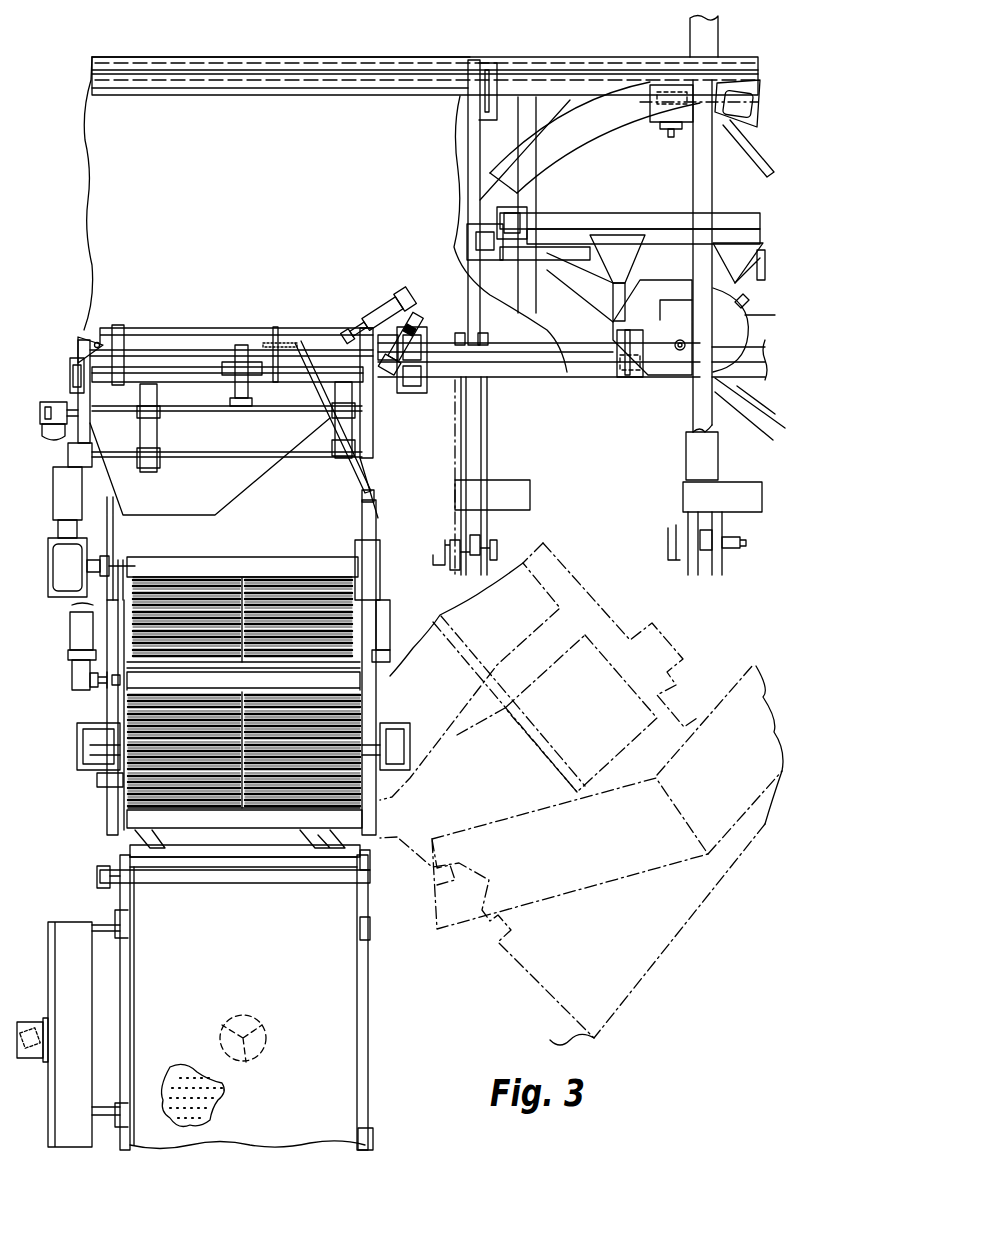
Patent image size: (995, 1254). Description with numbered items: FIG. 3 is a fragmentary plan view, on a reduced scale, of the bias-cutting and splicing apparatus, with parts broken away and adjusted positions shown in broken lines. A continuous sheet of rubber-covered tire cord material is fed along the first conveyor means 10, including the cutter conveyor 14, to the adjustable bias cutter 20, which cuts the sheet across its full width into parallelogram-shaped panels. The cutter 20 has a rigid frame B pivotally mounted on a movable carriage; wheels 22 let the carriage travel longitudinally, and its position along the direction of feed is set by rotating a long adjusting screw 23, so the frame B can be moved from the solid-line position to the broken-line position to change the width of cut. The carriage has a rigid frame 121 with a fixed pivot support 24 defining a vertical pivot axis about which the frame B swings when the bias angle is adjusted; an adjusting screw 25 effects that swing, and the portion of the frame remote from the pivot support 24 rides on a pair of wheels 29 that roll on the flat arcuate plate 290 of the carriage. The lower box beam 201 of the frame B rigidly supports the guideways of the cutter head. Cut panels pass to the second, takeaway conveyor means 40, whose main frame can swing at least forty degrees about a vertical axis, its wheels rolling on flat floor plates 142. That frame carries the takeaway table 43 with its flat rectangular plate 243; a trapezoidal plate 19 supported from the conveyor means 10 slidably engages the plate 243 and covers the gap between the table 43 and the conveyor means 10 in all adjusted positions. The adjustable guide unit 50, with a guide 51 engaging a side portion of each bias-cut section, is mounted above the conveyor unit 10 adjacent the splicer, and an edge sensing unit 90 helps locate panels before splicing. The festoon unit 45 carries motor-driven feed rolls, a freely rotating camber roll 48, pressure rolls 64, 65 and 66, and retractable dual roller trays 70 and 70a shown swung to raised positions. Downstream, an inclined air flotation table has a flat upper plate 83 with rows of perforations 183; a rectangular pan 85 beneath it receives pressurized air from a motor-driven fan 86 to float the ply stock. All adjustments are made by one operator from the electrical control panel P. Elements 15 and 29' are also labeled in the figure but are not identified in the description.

The first conveyor means 10 is at (132, 28).
The cutter conveyor 14 is at (92, 165).
The guide rail 15 is at (290, 106).
The flat horizontal plate 19 is at (238, 489).
The adjustable bias cutter 20 is at (668, 50).
The wheels 22 is at (478, 55).
The long adjusting screw 23 is at (583, 218).
The fixed pivot support 24 is at (678, 352).
The adjusting screw 25 is at (655, 252).
The wheels 29 is at (750, 128).
The guide member 29' is at (655, 125).
The flat arcuate plate 290 is at (537, 165).
The lower box beam 201 is at (702, 160).
The rigid frame 121 is at (684, 298).
The rigid frame B is at (492, 445).
The edge sensing unit 90 is at (381, 318).
The adjustable guide unit 50 is at (380, 430).
The takeaway table 43 is at (368, 481).
The guide 51 is at (147, 472).
The pressure roll 64 is at (248, 567).
The retractable dual roller tray 70a is at (287, 586).
The flat rectangular plate 243 is at (340, 560).
The festoon unit 45 is at (62, 668).
The second conveyor means 40 is at (30, 770).
The pressure roll 65 is at (135, 688).
The camber roll 48 is at (350, 819).
The retractable dual roller tray 70 is at (225, 792).
The pressure roll 66 is at (268, 878).
The rectangular pan 85 is at (357, 1030).
The motor-driven fan 86 is at (262, 1017).
The perforations 183 is at (208, 1090).
The flat rectangular upper plate 83 is at (268, 1138).
The electrical control panel P is at (48, 998).
The flat floor plates 142 is at (580, 897).